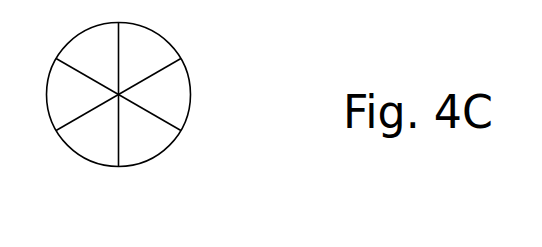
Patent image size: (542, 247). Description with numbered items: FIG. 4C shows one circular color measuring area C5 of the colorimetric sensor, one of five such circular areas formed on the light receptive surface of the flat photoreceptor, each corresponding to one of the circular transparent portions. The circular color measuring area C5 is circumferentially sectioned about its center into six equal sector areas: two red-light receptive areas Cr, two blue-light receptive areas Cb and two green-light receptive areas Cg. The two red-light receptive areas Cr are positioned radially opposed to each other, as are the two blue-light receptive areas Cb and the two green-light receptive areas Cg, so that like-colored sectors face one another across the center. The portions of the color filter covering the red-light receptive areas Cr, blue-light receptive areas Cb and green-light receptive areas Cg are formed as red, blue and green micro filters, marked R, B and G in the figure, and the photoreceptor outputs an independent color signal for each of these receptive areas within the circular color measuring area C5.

The red-light receptive area Cr is at (76, 47).
The blue-light receptive area Cb is at (163, 53).
The green-light receptive area Cg is at (50, 95).
The circular color measuring area C5 is at (190, 80).